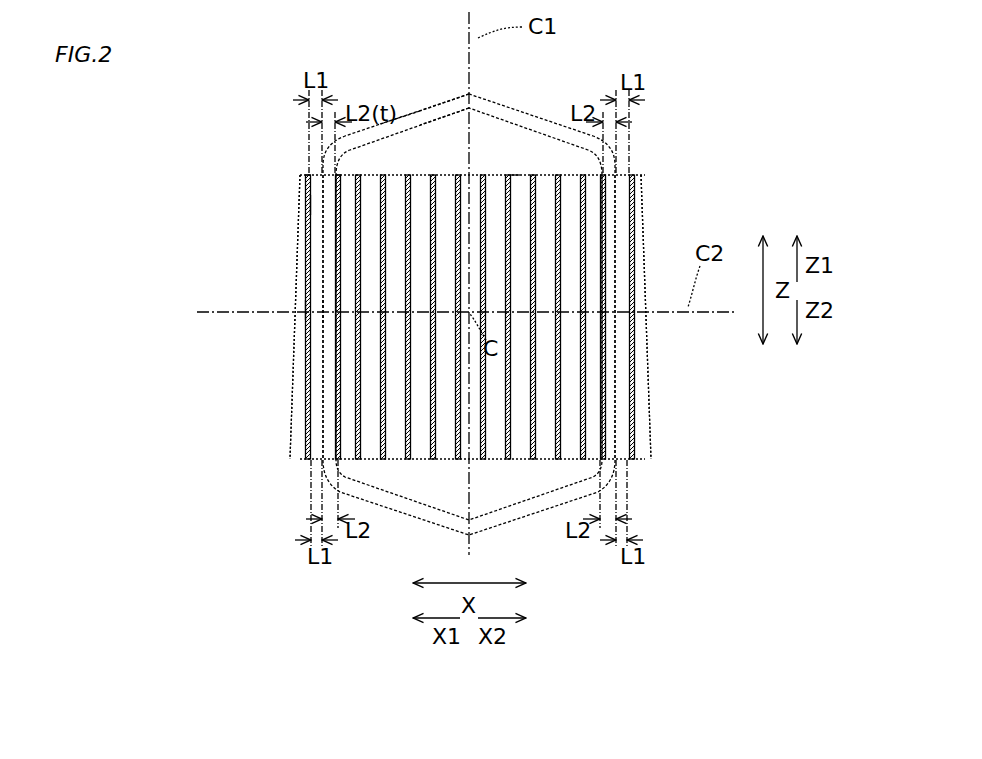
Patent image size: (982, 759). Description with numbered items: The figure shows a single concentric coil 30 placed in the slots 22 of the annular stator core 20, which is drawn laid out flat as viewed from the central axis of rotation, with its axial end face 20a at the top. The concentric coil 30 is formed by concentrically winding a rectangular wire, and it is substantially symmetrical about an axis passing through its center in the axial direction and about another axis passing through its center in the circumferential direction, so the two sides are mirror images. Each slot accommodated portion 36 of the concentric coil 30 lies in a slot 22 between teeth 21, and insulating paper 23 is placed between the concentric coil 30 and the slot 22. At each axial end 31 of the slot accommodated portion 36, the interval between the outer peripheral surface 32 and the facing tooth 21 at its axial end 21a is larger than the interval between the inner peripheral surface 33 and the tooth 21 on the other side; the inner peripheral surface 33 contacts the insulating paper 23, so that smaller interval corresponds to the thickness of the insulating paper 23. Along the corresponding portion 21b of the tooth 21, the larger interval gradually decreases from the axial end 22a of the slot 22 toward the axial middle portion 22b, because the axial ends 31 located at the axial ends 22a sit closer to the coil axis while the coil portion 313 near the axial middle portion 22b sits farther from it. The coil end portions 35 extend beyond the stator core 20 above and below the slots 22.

The stator core 20 is at (642, 238).
The axial end face 20a is at (515, 173).
The tooth 21 is at (386, 461).
The axial end of tooth 21a is at (305, 176).
The corresponding portion of tooth 21b is at (306, 205).
The slot 22 is at (302, 196).
The axial end of slot 22a is at (310, 172).
The axial middle portion of slot 22b is at (308, 311).
The insulating paper 23 is at (362, 260).
The concentric coil 30 is at (508, 107).
The axial end of slot accommodated portion 31 is at (321, 168).
The coil portion 313 is at (320, 316).
The outer peripheral surface 32 is at (424, 115).
The inner peripheral surface 33 is at (429, 124).
The coil end portion 35 is at (401, 116).
The slot accommodated portion 36 is at (316, 272).